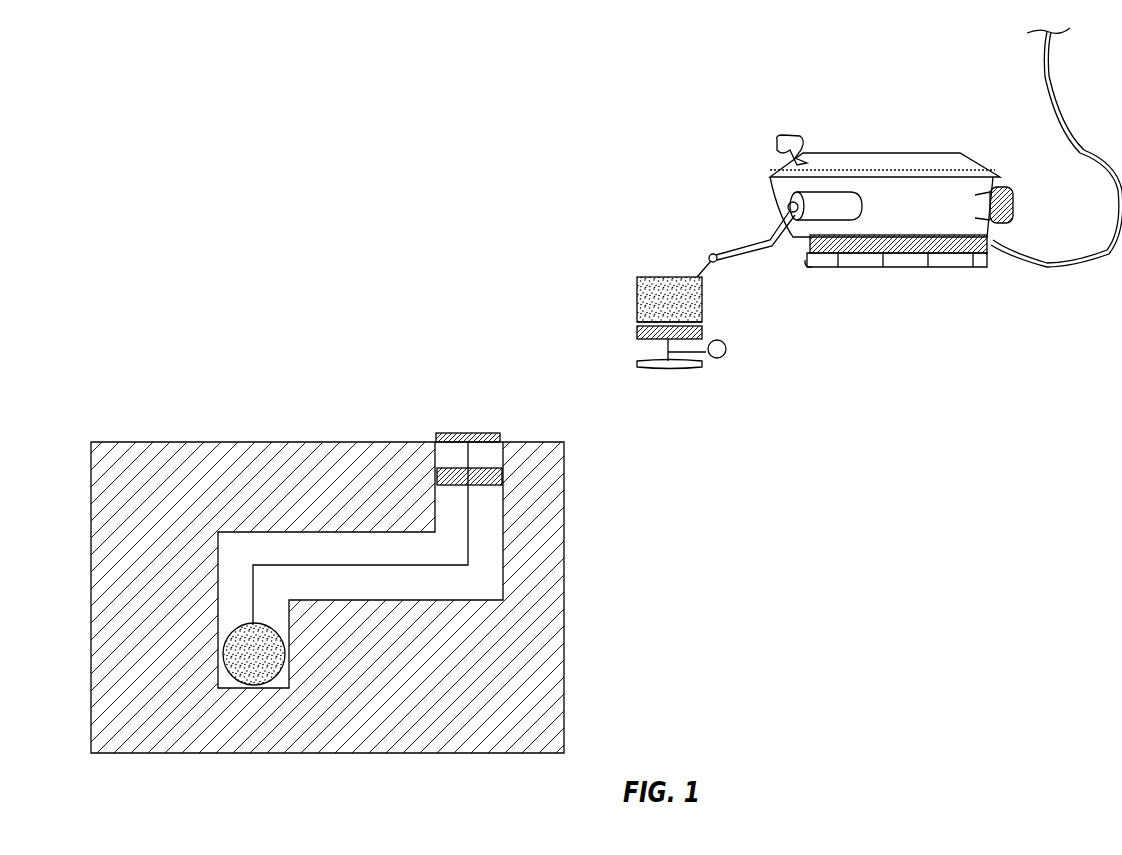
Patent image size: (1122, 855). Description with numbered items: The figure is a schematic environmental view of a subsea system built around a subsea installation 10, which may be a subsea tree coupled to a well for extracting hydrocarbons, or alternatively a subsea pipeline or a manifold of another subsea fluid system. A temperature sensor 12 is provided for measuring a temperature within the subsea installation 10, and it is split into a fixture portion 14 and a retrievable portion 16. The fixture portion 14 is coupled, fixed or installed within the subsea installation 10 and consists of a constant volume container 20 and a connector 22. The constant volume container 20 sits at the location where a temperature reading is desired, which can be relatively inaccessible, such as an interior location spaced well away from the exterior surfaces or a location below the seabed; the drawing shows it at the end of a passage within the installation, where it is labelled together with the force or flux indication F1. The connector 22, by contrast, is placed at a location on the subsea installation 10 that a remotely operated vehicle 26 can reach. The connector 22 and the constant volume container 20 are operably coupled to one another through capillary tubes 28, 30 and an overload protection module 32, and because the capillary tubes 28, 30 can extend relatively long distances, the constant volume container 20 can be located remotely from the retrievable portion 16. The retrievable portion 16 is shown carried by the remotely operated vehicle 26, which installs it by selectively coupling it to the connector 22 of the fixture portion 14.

The subsea installation 10 is at (148, 412).
The fixture portion 14 is at (310, 438).
The temperature sensor 12 is at (540, 412).
The connector 22 is at (475, 433).
The capillary tube 30 is at (470, 457).
The overload protection module 32 is at (503, 482).
The capillary tube 28 is at (362, 568).
The constant volume container 20 is at (262, 625).
The force F1 is at (243, 637).
The retrievable portion 16 is at (653, 250).
The remotely operated vehicle 26 is at (900, 152).